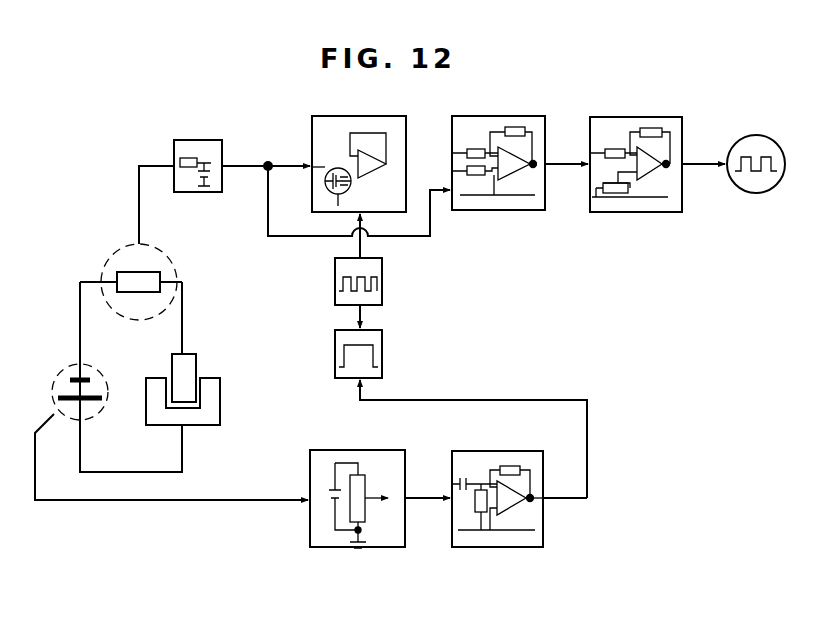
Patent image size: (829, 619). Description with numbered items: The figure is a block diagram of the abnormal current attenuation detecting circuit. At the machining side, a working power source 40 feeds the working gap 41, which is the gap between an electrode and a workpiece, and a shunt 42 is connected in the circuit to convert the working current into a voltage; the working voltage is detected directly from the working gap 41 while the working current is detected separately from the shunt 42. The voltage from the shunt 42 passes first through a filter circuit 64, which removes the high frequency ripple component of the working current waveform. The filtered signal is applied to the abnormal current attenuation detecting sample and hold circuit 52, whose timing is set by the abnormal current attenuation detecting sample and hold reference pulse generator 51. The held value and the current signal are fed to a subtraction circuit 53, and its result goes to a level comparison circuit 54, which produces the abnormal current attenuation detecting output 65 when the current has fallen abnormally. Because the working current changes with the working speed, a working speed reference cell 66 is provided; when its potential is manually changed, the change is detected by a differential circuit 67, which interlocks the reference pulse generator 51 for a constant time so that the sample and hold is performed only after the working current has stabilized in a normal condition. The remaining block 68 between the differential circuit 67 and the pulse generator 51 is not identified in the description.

The working power source 40 is at (103, 370).
The working gap 41 is at (196, 356).
The shunt 42 is at (172, 259).
The abnormal current attenuation detecting sample and hold reference pulse generator 51 is at (382, 283).
The abnormal current attenuation detecting sample and hold circuit 52 is at (346, 110).
The subtraction circuit 53 is at (482, 110).
The level comparison circuit 54 is at (624, 110).
The filter circuit 64 is at (192, 141).
The abnormal current attenuation detecting output 65 is at (754, 135).
The working speed reference cell 66 is at (345, 451).
The differential circuit 67 is at (481, 451).
The pulse generator 68 is at (382, 337).